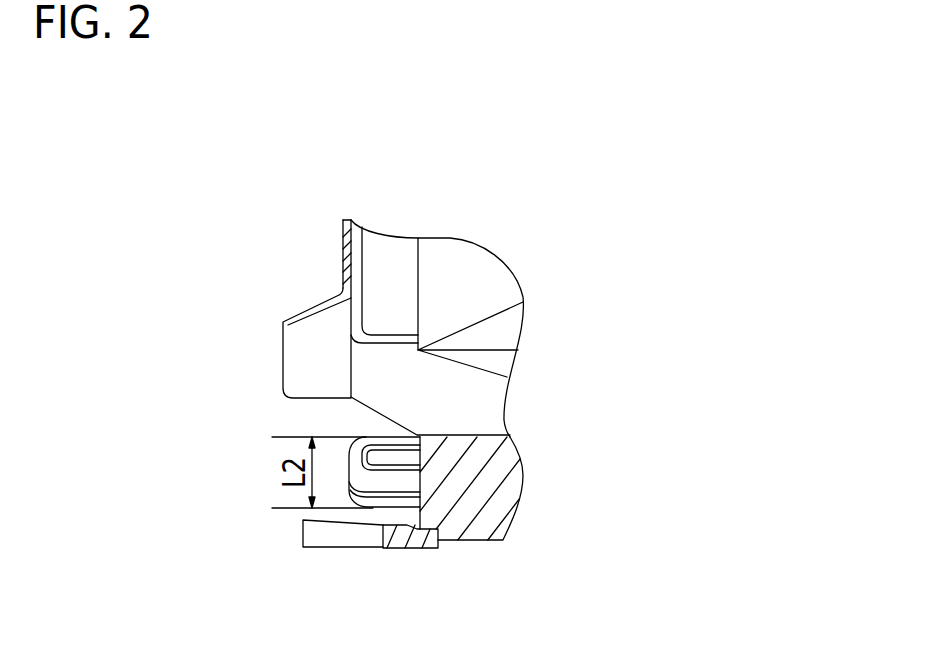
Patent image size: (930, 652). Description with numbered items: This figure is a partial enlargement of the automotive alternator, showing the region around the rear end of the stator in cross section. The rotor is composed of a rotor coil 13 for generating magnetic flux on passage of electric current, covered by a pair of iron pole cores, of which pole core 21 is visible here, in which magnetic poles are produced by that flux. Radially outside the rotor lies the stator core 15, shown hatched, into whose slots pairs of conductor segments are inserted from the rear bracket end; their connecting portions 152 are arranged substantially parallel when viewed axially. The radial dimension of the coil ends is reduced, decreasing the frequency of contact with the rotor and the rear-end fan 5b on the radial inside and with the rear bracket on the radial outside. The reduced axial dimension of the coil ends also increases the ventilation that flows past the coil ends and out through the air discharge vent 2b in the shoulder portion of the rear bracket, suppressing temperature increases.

The rotor coil 13 is at (497, 293).
The pole core 21 is at (477, 410).
The stator core 15 is at (507, 492).
The connecting portion 152 is at (365, 505).
The air discharge vent 2b is at (343, 537).
The fan 5b is at (303, 375).